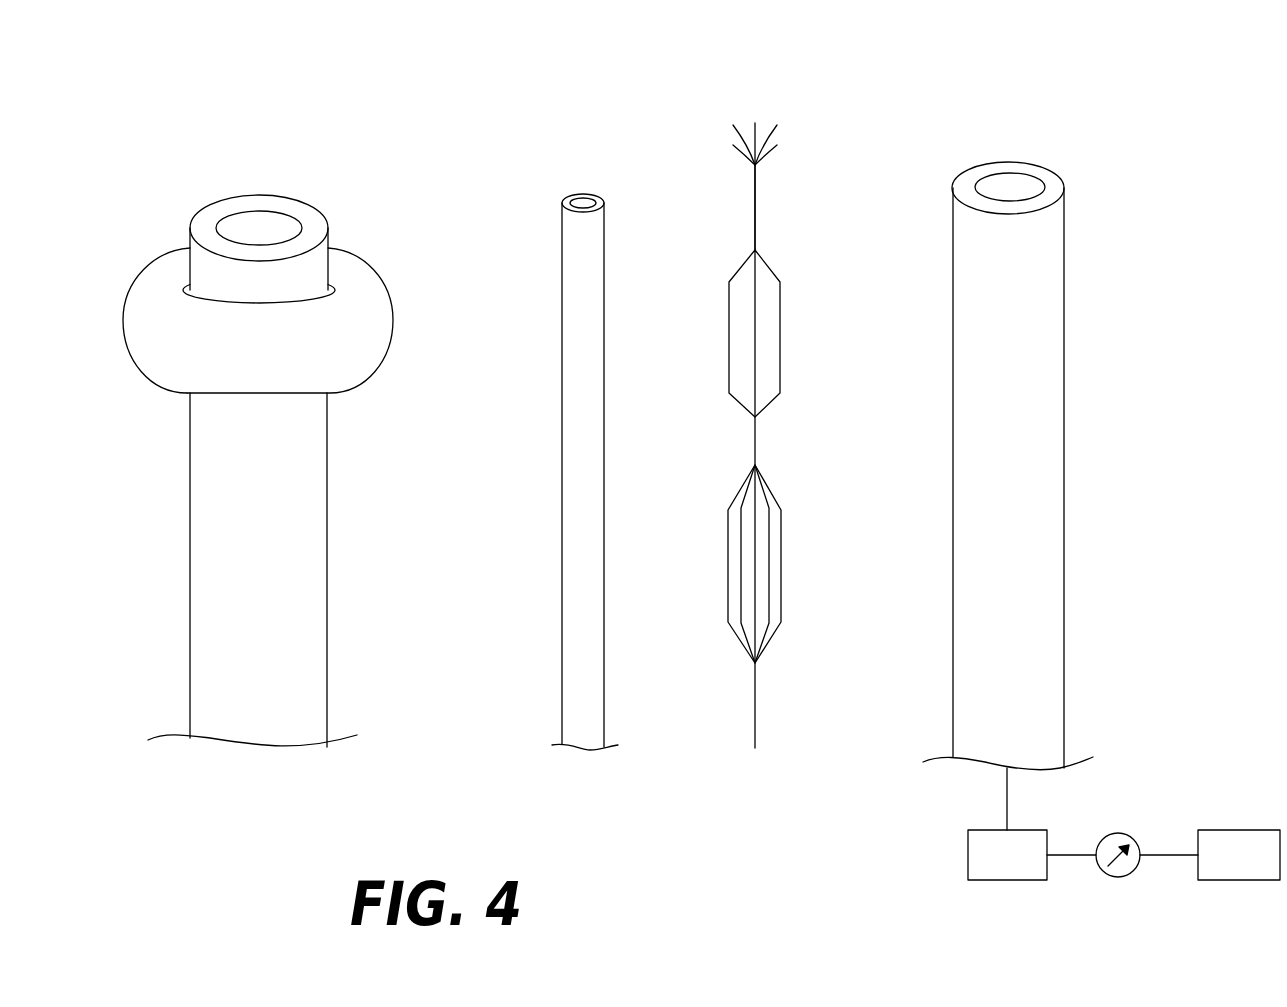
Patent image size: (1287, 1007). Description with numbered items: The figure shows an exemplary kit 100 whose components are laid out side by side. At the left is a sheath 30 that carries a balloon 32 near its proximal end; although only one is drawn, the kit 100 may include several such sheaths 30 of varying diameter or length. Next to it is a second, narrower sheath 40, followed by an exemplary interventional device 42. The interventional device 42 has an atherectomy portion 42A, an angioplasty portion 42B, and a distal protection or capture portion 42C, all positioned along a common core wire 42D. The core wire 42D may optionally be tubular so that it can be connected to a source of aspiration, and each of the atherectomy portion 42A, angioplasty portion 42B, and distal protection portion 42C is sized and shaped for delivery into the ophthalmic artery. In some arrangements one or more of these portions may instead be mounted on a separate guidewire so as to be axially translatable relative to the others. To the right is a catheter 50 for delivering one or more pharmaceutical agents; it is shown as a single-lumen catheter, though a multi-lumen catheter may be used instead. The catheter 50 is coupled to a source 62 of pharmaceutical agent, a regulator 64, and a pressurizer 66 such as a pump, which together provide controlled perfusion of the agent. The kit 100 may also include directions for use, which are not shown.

The kit 100 is at (1087, 82).
The sheath 30 is at (310, 550).
The balloon 32 is at (375, 325).
The sheath 40 is at (567, 483).
The interventional device 42 is at (759, 425).
The atherectomy portion 42A is at (781, 553).
The angioplasty portion 42B is at (780, 332).
The distal protection portion 42C is at (765, 160).
The core wire 42D is at (758, 232).
The catheter 50 is at (1064, 435).
The source 62 is at (1007, 824).
The regulator 64 is at (1130, 835).
The pressurizer 66 is at (1239, 855).